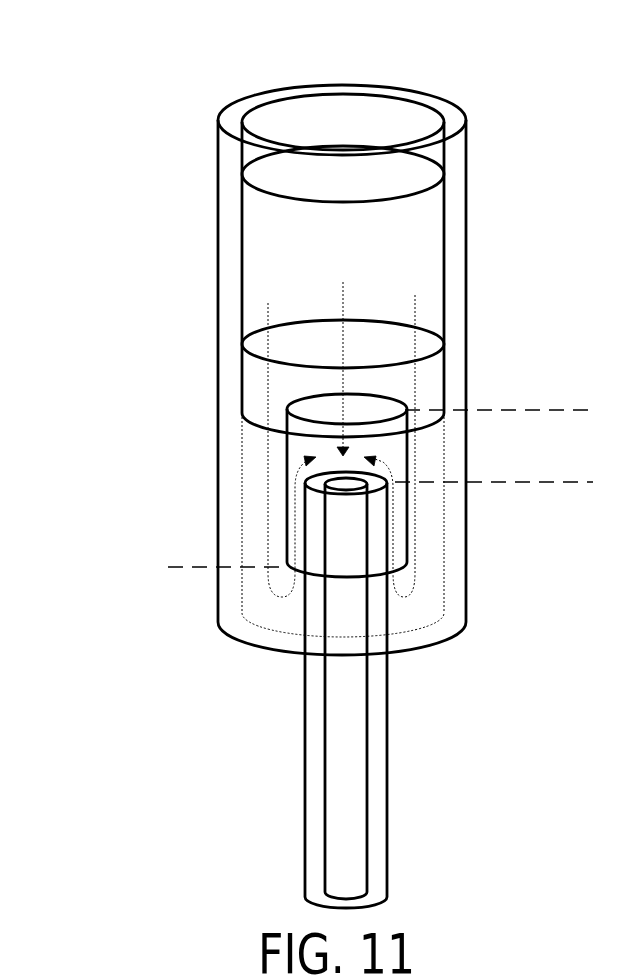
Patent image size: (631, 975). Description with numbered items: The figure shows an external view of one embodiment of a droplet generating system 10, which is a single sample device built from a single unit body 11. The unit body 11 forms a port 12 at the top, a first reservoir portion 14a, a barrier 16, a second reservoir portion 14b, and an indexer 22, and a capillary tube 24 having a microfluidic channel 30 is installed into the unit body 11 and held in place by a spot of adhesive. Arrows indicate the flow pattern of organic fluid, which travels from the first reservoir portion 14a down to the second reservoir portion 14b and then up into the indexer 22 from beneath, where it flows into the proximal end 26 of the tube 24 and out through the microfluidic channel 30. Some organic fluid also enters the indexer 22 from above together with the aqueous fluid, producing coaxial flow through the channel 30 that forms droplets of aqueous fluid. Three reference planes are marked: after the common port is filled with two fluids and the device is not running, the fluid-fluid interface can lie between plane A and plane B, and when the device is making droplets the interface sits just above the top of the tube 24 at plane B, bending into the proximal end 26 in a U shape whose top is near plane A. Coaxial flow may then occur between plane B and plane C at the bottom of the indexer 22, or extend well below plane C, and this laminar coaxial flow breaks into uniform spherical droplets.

The droplet generating system 10 is at (135, 168).
The unit body 11 is at (215, 448).
The port 12 is at (403, 128).
The first reservoir portion 14a is at (422, 235).
The second reservoir portion 14b is at (420, 593).
The barrier 16 is at (430, 385).
The indexer 22 is at (395, 449).
The tube 24 is at (390, 718).
The proximal end 26 is at (330, 473).
The microfluidic channel 30 is at (342, 851).
The plane A is at (502, 391).
The plane B is at (497, 461).
The plane C is at (227, 544).